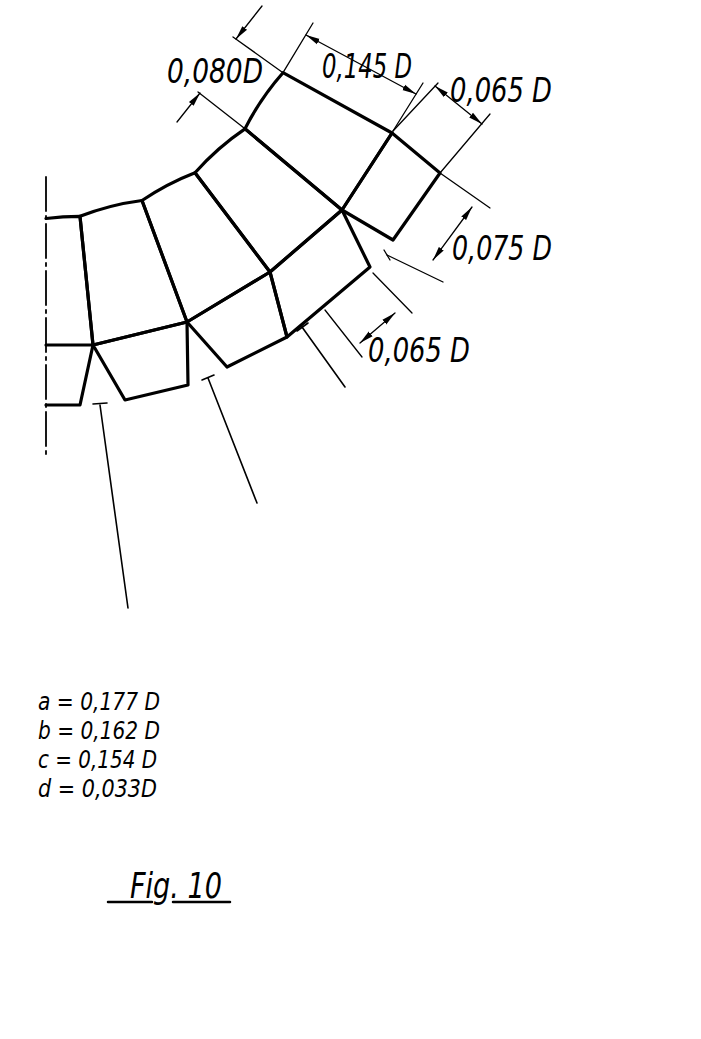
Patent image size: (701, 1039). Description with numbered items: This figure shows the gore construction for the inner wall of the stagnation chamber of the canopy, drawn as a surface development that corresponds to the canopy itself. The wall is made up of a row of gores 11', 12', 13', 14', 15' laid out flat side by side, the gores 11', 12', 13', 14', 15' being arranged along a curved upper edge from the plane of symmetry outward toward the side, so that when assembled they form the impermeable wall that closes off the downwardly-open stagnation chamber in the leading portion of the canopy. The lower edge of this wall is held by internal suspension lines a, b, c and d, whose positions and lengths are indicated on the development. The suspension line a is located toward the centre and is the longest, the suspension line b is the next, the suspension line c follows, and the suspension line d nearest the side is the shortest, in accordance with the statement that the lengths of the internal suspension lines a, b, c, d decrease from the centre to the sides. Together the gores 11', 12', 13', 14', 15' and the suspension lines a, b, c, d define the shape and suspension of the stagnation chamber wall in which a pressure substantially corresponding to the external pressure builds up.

The blade section 11' is at (342, 156).
The blade section 12' is at (282, 233).
The blade section 13' is at (214, 270).
The blade section 14' is at (134, 301).
The blade section 15' is at (69, 310).
The internal suspension line a is at (187, 630).
The internal suspension line b is at (187, 630).
The internal suspension line c is at (187, 630).
The internal suspension line d is at (410, 278).